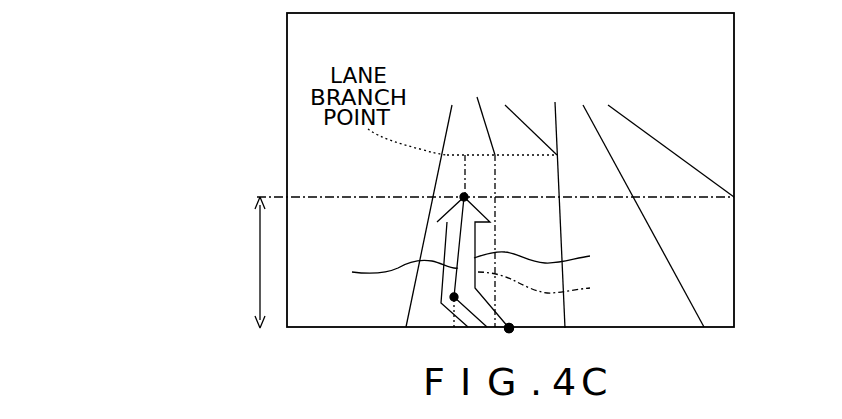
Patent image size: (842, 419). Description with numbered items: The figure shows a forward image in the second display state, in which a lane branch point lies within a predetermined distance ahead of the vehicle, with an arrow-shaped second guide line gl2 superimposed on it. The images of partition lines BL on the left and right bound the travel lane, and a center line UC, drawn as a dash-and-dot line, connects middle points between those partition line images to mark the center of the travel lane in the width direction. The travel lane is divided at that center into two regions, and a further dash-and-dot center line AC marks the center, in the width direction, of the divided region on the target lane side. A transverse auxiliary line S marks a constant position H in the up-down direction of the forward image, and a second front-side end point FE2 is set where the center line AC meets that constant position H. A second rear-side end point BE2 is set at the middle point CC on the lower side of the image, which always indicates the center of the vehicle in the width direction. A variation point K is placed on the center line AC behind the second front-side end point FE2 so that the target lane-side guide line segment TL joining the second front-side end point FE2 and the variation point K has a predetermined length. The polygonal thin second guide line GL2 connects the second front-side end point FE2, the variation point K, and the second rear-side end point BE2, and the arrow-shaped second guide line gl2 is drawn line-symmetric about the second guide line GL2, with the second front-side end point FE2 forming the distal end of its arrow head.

The images of partition lines BL is at (452, 106).
The auxiliary line S is at (314, 197).
The center line AC is at (464, 171).
The second front-side end point FE2 is at (464, 197).
The target lane-side guide line segment TL is at (446, 258).
The second guide line GL2 is at (376, 270).
The arrow-shaped second guide line gl2 is at (549, 259).
The variation point K is at (454, 297).
The center line UC is at (555, 290).
The middle point CC is at (509, 328).
The second rear-side end point BE2 is at (587, 343).
The constant position H is at (234, 266).